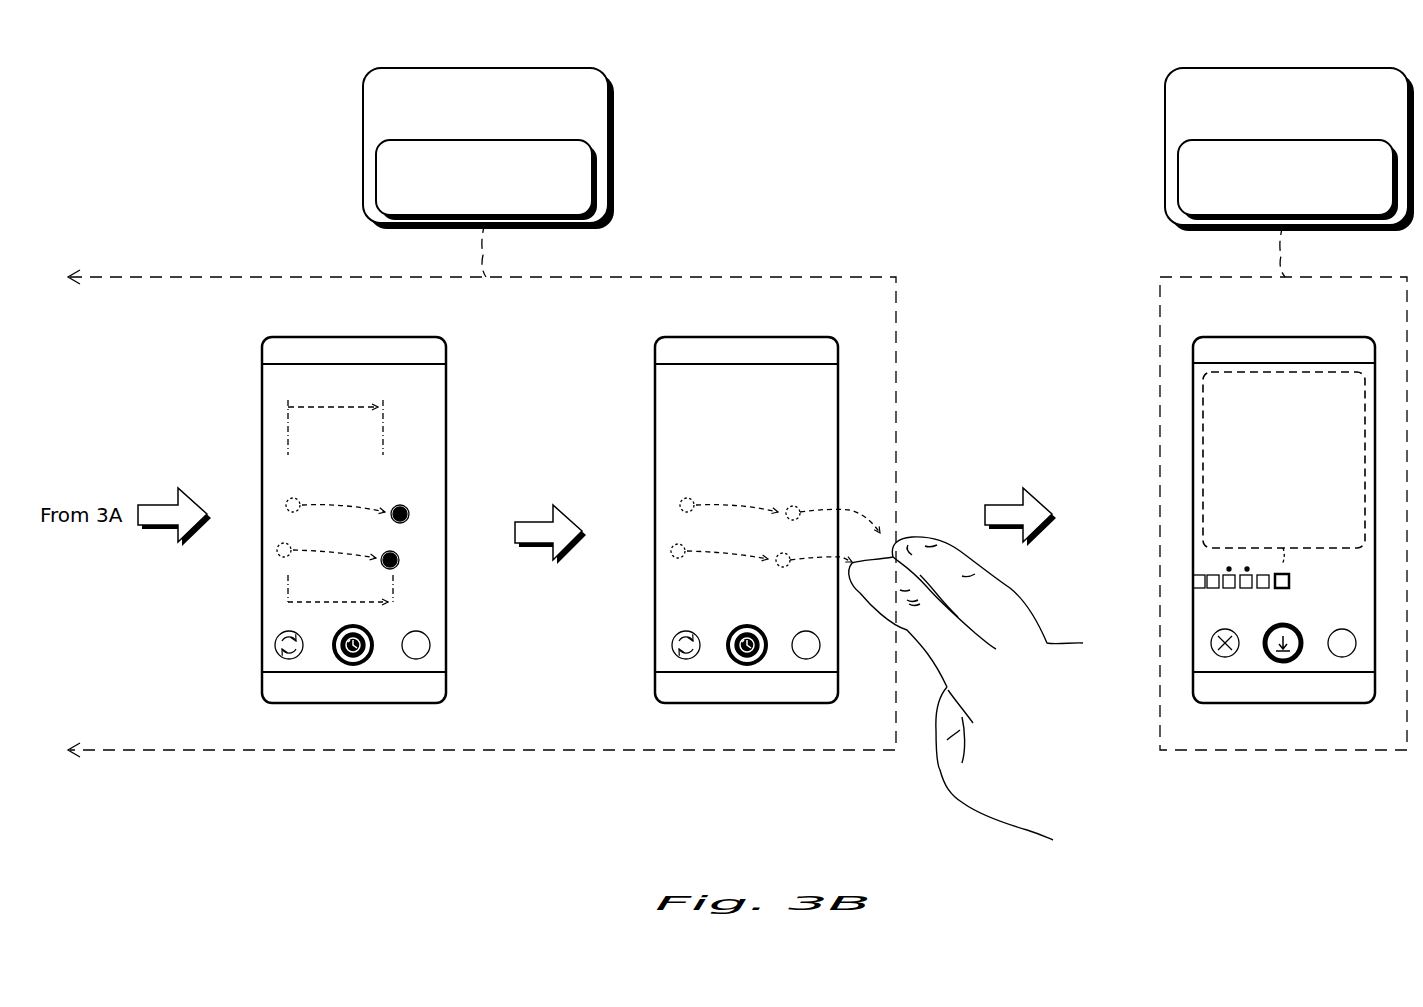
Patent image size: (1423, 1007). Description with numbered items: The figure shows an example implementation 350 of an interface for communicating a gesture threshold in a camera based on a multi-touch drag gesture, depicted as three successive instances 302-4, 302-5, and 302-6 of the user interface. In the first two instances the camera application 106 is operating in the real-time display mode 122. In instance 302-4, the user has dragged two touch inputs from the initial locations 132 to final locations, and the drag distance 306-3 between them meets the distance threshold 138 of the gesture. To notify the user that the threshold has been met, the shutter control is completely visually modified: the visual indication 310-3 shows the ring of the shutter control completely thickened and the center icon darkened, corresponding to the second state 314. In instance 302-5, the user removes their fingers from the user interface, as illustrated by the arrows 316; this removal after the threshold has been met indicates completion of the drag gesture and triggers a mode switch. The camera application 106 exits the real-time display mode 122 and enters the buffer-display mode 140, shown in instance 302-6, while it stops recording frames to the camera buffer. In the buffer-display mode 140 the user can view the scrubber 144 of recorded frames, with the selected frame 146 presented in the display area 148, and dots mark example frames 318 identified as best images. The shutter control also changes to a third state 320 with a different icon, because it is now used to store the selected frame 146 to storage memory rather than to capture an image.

The example implementation 350 is at (186, 88).
The camera application 106 is at (888, 172).
The real-time display mode 122 is at (486, 180).
The buffer-display mode 140 is at (1288, 180).
The instance of the user interface 302-4 is at (352, 336).
The instance of the user interface 302-5 is at (745, 336).
The instance of the user interface 302-6 is at (1284, 336).
The distance threshold 138 is at (330, 407).
The initial locations 132 is at (279, 546).
The drag distance 306-3 is at (310, 602).
The visual indication 310-3 is at (345, 653).
The second state 314 is at (357, 652).
The arrows 316 is at (842, 557).
The display area 148 is at (1205, 418).
The scrubber 144 is at (1205, 565).
The selected frame 146 is at (1291, 578).
The example frames 318 is at (1247, 588).
The third state 320 is at (1287, 661).